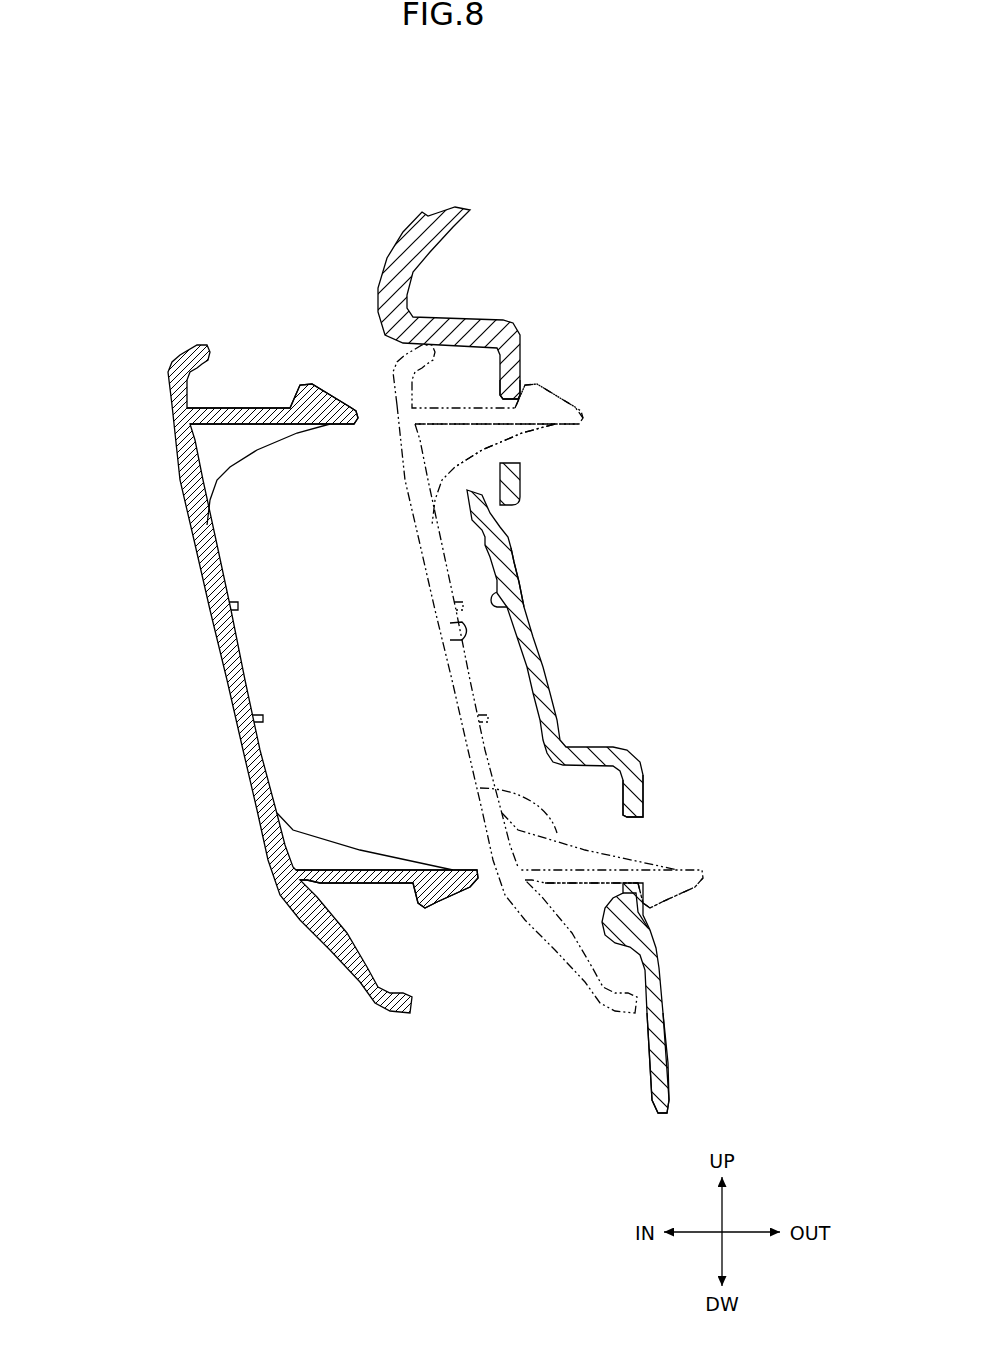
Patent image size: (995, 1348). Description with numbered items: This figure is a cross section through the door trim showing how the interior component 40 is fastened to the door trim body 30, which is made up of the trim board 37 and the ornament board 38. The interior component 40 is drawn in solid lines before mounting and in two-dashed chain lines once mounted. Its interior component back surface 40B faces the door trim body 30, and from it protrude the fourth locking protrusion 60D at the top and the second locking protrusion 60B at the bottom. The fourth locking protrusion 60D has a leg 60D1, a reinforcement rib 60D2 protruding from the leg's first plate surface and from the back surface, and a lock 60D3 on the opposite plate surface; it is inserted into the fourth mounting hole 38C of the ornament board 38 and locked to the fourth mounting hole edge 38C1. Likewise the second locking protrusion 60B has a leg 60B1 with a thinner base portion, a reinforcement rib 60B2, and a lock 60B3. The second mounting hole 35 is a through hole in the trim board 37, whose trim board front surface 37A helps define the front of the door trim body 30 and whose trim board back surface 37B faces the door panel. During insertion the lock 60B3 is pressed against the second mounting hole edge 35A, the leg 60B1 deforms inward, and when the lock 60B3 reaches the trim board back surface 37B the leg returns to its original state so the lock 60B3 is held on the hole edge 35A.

The door trim body 30 is at (580, 625).
The second mounting hole 35 is at (637, 817).
The second mounting hole edge 35A is at (660, 898).
The trim board 37 is at (643, 1058).
The trim board front surface 37A is at (500, 604).
The trim board back surface 37B is at (518, 570).
The ornament board 38 is at (408, 256).
The fourth mounting hole 38C is at (513, 463).
The fourth mounting hole edge 38C1 is at (510, 390).
The interior component 40 is at (147, 453).
The interior component back surface 40B is at (452, 634).
The fourth locking protrusion 60D is at (282, 388).
The leg 60D1 is at (467, 425).
The reinforcement rib 60D2 is at (457, 468).
The lock 60D3 is at (540, 392).
The second locking protrusion 60B is at (448, 917).
The leg 60B1 is at (580, 882).
The reinforcement rib 60B2 is at (479, 787).
The lock 60B3 is at (664, 905).